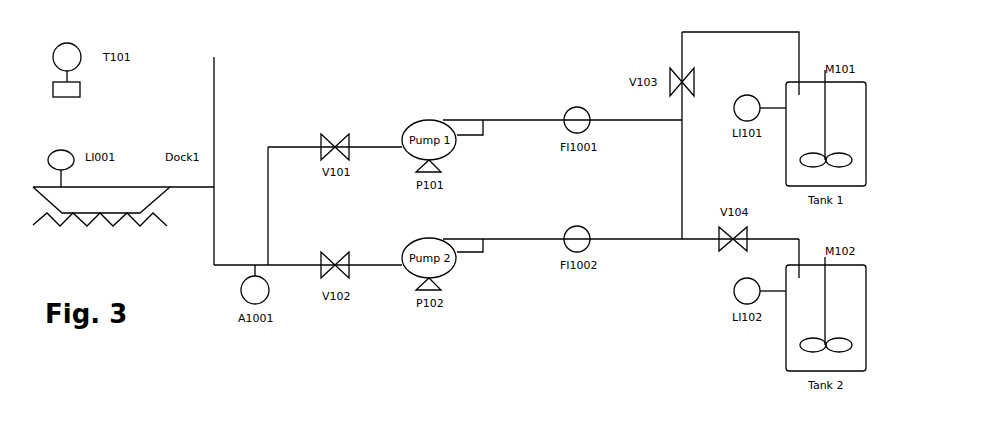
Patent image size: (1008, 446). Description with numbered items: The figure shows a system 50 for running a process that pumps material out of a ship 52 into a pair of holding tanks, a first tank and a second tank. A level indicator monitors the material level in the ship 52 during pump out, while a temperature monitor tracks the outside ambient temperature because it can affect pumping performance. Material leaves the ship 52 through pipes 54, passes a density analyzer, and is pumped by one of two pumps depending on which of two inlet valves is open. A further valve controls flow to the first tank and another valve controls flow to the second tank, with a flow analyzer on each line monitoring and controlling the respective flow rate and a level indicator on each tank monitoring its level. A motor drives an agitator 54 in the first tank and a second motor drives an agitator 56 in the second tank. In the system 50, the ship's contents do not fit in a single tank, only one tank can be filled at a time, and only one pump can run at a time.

The system 50 is at (602, 358).
The ship 52 is at (150, 197).
The pipes / agitator 54 is at (222, 200).
The agitator 56 is at (808, 350).